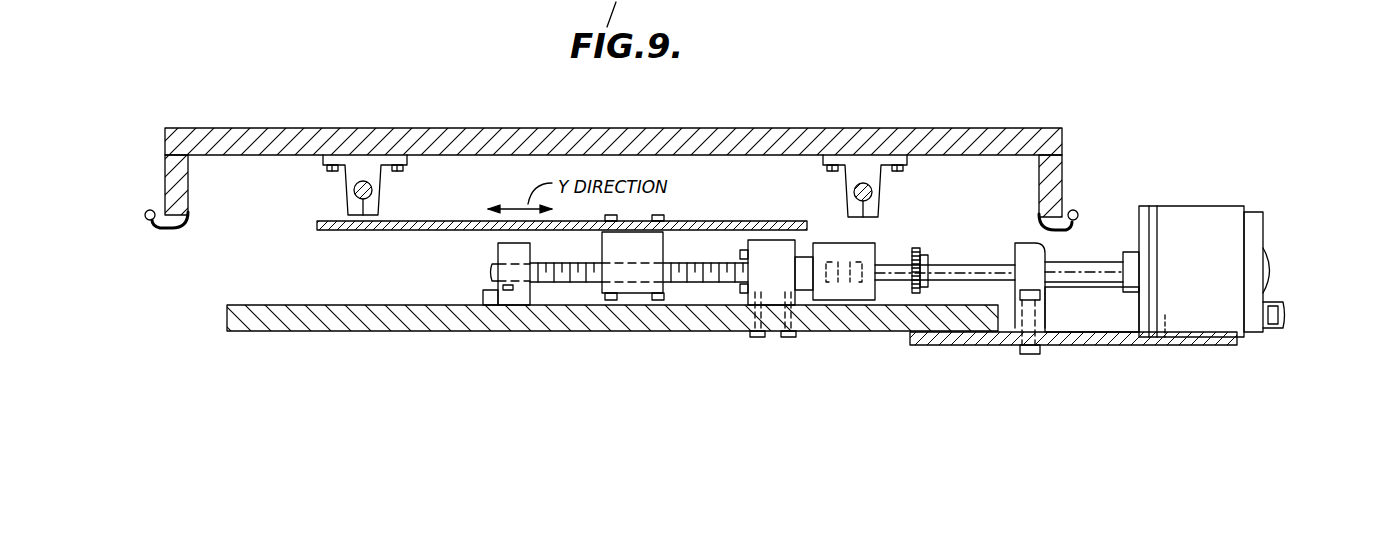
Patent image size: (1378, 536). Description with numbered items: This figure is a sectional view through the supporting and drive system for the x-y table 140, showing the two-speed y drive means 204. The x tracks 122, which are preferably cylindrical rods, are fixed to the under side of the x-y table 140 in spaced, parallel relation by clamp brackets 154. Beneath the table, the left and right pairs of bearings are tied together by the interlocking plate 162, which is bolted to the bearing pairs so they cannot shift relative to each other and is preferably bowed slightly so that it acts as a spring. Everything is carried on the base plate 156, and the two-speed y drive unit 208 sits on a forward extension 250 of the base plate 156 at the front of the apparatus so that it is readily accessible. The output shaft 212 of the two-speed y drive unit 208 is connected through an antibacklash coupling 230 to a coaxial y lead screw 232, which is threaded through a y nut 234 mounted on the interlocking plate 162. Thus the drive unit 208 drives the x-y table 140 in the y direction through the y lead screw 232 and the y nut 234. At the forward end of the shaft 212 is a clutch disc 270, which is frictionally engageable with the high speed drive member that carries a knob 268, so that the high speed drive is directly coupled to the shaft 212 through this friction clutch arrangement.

The x-y table 140 is at (728, 128).
The clamp brackets 154 is at (355, 168).
The x tracks 122 is at (368, 182).
The interlocking plate 162 is at (453, 220).
The base plate 156 is at (360, 320).
The two-speed y drive means 204 is at (635, 295).
The y nut 234 is at (611, 293).
The y lead screw 232 is at (700, 282).
The antibacklash coupling 230 is at (845, 302).
The y output drive shaft 212 is at (1088, 265).
The forward extension of the base plate 250 is at (1092, 333).
The two-speed y drive unit 208 is at (1213, 202).
The clutch disc 270 is at (1270, 265).
The knob 268 is at (1278, 324).